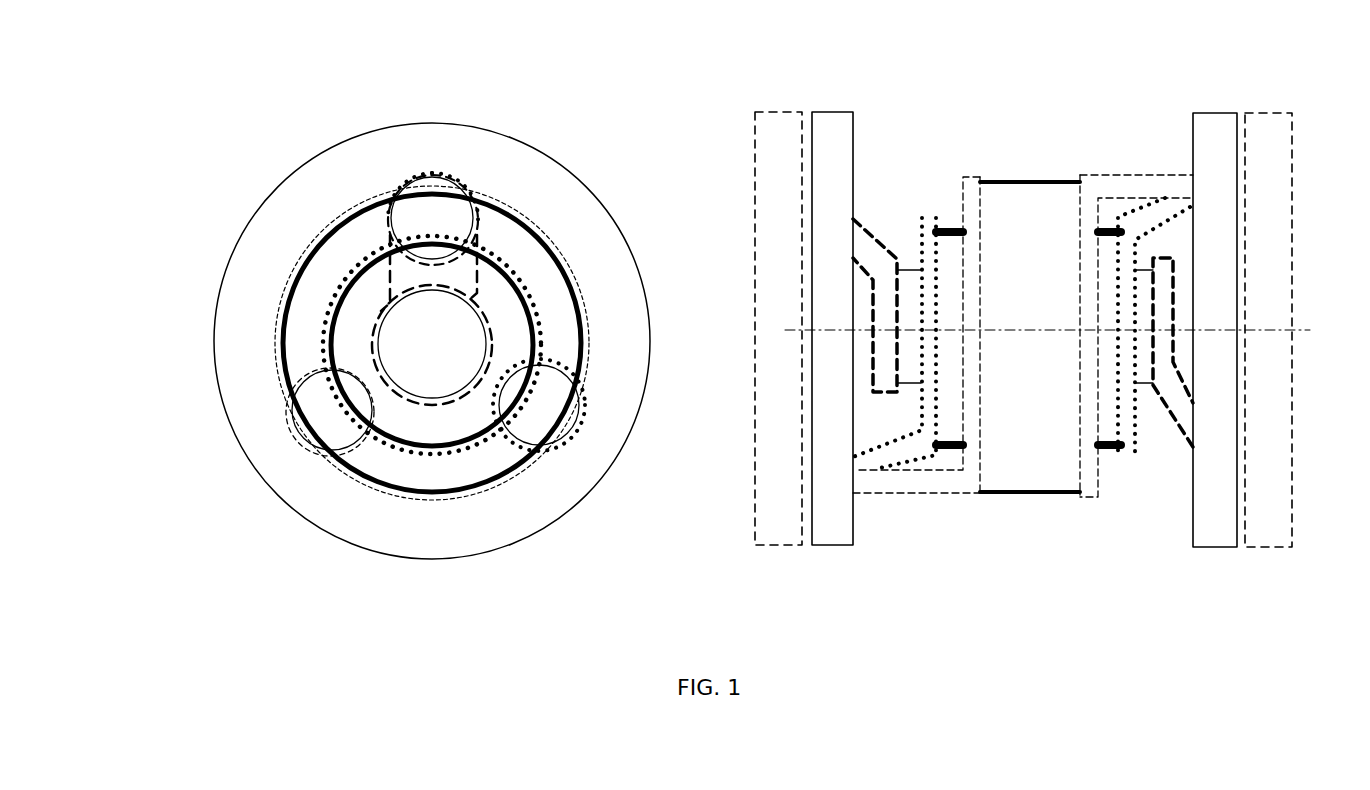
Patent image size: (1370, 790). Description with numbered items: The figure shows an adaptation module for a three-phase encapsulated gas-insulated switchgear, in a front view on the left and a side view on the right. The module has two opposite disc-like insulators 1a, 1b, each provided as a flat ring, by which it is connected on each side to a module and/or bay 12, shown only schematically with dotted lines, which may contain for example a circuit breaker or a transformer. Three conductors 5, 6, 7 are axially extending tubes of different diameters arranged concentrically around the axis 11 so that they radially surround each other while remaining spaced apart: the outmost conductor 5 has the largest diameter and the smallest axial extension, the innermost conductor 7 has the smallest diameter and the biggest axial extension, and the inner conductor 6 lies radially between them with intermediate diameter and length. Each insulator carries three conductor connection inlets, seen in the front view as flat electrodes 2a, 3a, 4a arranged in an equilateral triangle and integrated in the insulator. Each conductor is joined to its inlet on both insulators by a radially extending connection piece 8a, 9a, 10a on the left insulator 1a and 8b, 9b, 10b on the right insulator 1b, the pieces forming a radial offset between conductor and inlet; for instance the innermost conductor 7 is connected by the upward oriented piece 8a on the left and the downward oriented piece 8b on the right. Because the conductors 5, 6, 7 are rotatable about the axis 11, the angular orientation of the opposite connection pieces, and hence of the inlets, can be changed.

The insulator 1a is at (643, 392).
The insulator 1b is at (1205, 548).
The conductor connection inlet 2a is at (450, 178).
The conductor connection inlet 3a is at (578, 424).
The conductor connection inlet 4a is at (300, 438).
The outmost conductor 5 is at (512, 213).
The inner conductor 6 is at (510, 260).
The innermost conductor 7 is at (480, 311).
The connection piece 8a is at (487, 322).
The connection piece 9a is at (865, 452).
The connection piece 10a is at (900, 493).
The axis 11 is at (912, 328).
The module and/or bay 12 is at (763, 118).
The connection piece 10b is at (1107, 175).
The connection piece 9b is at (1133, 217).
The connection piece 8b is at (1183, 437).